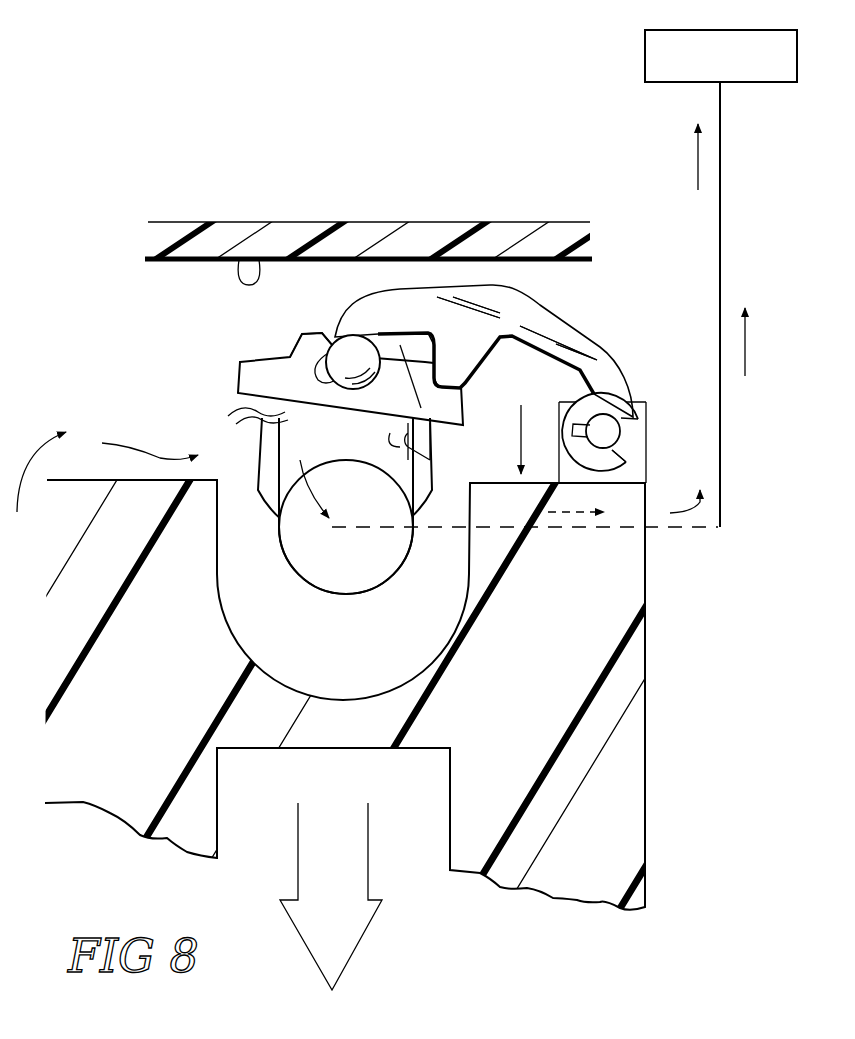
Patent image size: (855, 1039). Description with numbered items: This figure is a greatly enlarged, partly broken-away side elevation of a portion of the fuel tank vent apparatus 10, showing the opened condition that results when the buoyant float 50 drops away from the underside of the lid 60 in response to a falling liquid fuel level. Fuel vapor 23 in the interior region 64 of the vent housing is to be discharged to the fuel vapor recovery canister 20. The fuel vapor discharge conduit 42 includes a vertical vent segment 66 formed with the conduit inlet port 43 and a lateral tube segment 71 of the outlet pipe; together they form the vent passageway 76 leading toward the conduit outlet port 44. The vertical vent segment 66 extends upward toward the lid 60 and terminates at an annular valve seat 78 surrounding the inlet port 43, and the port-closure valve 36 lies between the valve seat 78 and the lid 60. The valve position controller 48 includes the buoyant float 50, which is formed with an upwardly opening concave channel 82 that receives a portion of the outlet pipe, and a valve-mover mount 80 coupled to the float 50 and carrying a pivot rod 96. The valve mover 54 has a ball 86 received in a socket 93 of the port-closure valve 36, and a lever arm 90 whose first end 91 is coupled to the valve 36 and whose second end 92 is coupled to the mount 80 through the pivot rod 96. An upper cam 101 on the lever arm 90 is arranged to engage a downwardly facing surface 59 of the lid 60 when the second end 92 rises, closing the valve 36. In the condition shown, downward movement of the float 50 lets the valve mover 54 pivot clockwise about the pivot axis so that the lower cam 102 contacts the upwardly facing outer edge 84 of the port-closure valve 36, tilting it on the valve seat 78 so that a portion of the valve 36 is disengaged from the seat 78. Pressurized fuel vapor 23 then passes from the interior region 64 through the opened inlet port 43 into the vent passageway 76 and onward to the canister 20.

The fuel tank vent apparatus 10 is at (549, 207).
The fuel vapor recovery canister 20 is at (645, 56).
The fuel vapor 23 is at (697, 162).
The port-closure valve 36 is at (256, 355).
The fuel vapor discharge conduit 42 is at (288, 620).
The conduit inlet port 43 is at (433, 436).
The conduit outlet port 44 is at (392, 615).
The valve position controller 48 is at (601, 322).
The buoyant float 50 is at (630, 727).
The valve mover 54 is at (408, 286).
The downwardly facing surface 59 is at (245, 258).
The lid 60 is at (302, 220).
The interior region 64 is at (198, 290).
The vertical vent segment 66 is at (268, 441).
The lateral tube segment 71 is at (347, 620).
The vent passageway 76 is at (326, 566).
The annular valve seat 78 is at (303, 444).
The valve-mover mount 80 is at (654, 422).
The concave channel 82 is at (432, 624).
The outer edge 84 is at (463, 390).
The ball 86 is at (356, 351).
The lever arm 90 is at (622, 340).
The first end 91 is at (361, 308).
The second end 92 is at (620, 381).
The socket 93 is at (305, 342).
The pivot rod 96 is at (617, 460).
The upper cam 101 is at (508, 293).
The lower cam 102 is at (450, 371).